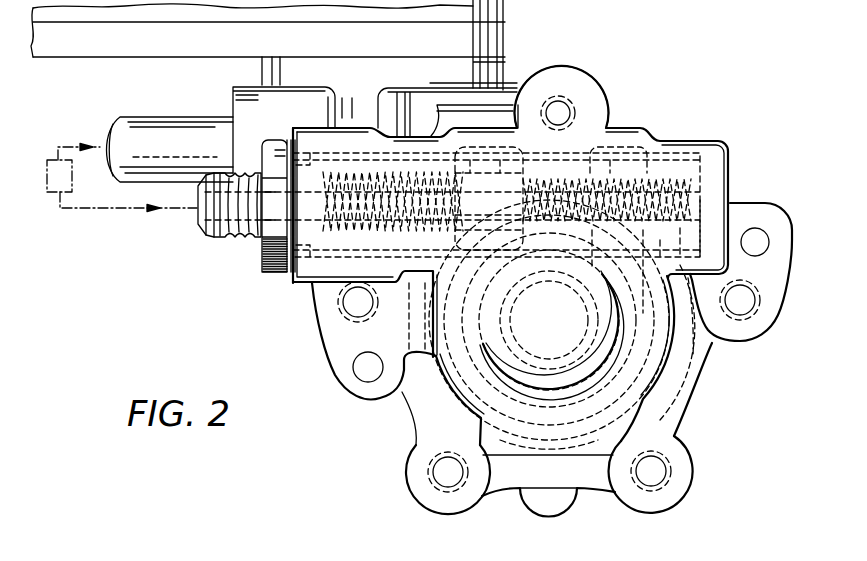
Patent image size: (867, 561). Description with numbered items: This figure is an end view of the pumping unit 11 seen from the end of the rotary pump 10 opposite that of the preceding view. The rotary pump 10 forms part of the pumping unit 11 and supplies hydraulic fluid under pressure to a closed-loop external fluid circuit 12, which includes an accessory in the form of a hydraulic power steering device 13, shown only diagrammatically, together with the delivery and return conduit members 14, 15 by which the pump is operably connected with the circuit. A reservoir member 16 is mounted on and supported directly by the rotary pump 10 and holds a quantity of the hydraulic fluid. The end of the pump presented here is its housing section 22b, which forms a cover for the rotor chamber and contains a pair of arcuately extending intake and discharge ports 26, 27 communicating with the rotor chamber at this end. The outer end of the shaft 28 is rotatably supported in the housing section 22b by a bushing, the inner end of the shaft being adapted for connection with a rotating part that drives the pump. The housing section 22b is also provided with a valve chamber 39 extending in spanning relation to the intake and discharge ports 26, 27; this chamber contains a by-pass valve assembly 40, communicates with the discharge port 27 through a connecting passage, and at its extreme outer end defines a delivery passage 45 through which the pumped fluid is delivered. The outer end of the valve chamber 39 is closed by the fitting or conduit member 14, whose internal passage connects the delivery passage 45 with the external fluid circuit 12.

The rotary pump 10 is at (688, 137).
The pumping unit 11 is at (510, 72).
The external fluid circuit 12 is at (80, 208).
The hydraulic power steering device 13 is at (47, 160).
The delivery conduit member 14 is at (213, 233).
The return conduit member 15 is at (148, 132).
The reservoir member 16 is at (73, 47).
The housing section 22b is at (665, 358).
The intake port 26 is at (457, 325).
The discharge port 27 is at (680, 272).
The shaft 28 is at (556, 345).
The valve chamber 39 is at (622, 156).
The by-pass valve assembly 40 is at (572, 168).
The delivery passage 45 is at (408, 178).